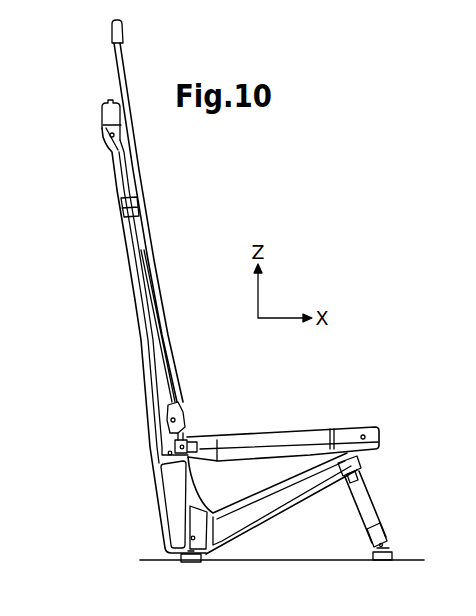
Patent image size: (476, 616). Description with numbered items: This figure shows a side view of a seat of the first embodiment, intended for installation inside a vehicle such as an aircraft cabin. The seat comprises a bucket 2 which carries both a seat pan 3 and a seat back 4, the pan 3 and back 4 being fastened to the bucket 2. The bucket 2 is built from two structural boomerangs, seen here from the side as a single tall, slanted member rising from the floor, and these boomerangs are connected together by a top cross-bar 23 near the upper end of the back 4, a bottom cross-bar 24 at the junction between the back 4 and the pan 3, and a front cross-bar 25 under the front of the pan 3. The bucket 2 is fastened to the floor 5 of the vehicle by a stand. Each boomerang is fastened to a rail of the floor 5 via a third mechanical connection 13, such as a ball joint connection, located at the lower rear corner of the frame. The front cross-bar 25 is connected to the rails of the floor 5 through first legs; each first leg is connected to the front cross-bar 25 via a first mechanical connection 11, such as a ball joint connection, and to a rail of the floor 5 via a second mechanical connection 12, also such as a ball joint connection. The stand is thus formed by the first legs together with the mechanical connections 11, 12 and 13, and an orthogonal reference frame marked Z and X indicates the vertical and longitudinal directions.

The bucket 2 is at (114, 368).
The seat pan 3 is at (306, 427).
The seat back 4 is at (151, 230).
The floor 5 is at (150, 560).
The first mechanical connection 11 is at (368, 479).
The second mechanical connection 12 is at (379, 565).
The third mechanical connection 13 is at (193, 564).
The top cross-bar 23 is at (102, 127).
The bottom cross-bar 24 is at (182, 413).
The front cross-bar 25 is at (362, 468).